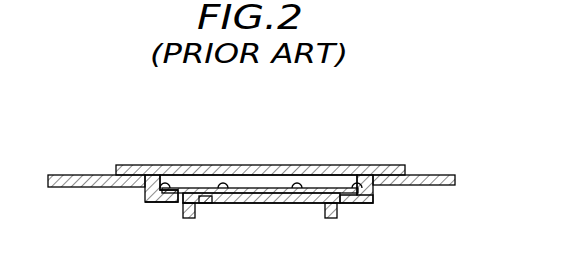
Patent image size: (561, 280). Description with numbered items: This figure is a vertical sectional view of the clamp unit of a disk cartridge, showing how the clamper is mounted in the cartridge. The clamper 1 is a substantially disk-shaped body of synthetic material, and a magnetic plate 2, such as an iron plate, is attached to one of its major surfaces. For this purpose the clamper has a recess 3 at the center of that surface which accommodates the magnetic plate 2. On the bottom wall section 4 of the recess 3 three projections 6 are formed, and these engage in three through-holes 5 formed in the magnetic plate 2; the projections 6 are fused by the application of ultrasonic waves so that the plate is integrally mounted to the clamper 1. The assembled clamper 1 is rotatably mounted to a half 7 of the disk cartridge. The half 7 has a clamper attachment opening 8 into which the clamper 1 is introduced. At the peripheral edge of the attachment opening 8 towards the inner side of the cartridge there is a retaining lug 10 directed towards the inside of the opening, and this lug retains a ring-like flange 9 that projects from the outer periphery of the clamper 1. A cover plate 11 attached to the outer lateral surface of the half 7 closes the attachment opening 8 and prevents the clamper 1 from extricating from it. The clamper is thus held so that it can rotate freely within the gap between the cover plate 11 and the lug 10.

The clamper 1 is at (188, 201).
The magnetic plate 2 is at (284, 187).
The recess 3 is at (193, 214).
The bottom wall section 4 is at (246, 205).
The through-holes 5 is at (221, 204).
The projections 6 is at (222, 185).
The half 7 is at (452, 174).
The clamper attachment opening 8 is at (374, 204).
The flange 9 is at (150, 193).
The retaining lug 10 is at (345, 205).
The cover plate 11 is at (175, 170).